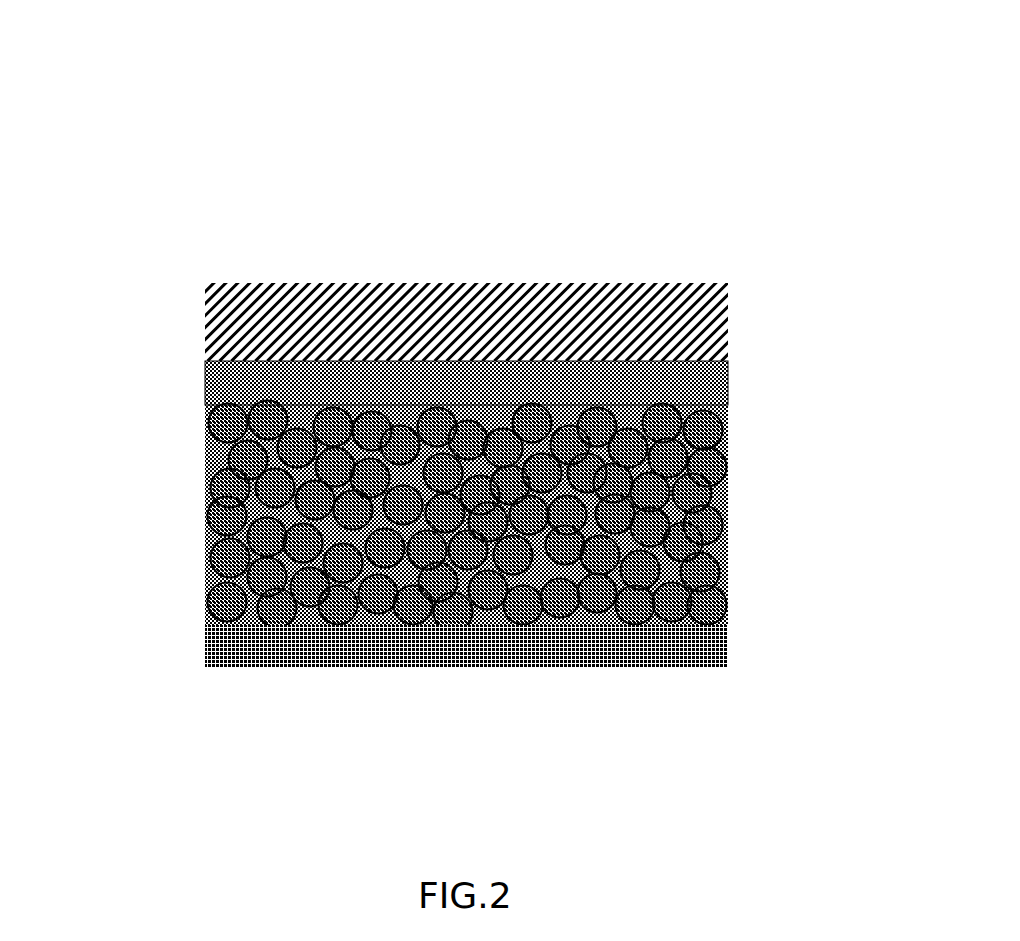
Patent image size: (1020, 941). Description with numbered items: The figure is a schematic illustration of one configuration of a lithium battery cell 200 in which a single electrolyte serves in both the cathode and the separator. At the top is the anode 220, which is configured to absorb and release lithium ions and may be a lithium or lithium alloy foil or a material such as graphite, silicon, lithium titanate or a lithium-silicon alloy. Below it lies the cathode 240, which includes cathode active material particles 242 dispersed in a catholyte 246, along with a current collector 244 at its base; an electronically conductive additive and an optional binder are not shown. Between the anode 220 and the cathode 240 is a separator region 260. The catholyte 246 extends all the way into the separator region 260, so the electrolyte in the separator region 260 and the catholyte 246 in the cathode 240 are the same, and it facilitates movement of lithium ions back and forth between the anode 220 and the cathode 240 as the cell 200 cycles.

The lithium battery cell 200 is at (463, 392).
The anode 220 is at (257, 305).
The cathode 240 is at (478, 572).
The cathode active material particles 242 is at (585, 550).
The current collector 244 is at (238, 655).
The catholyte 246 is at (722, 545).
The separator region 260 is at (740, 365).